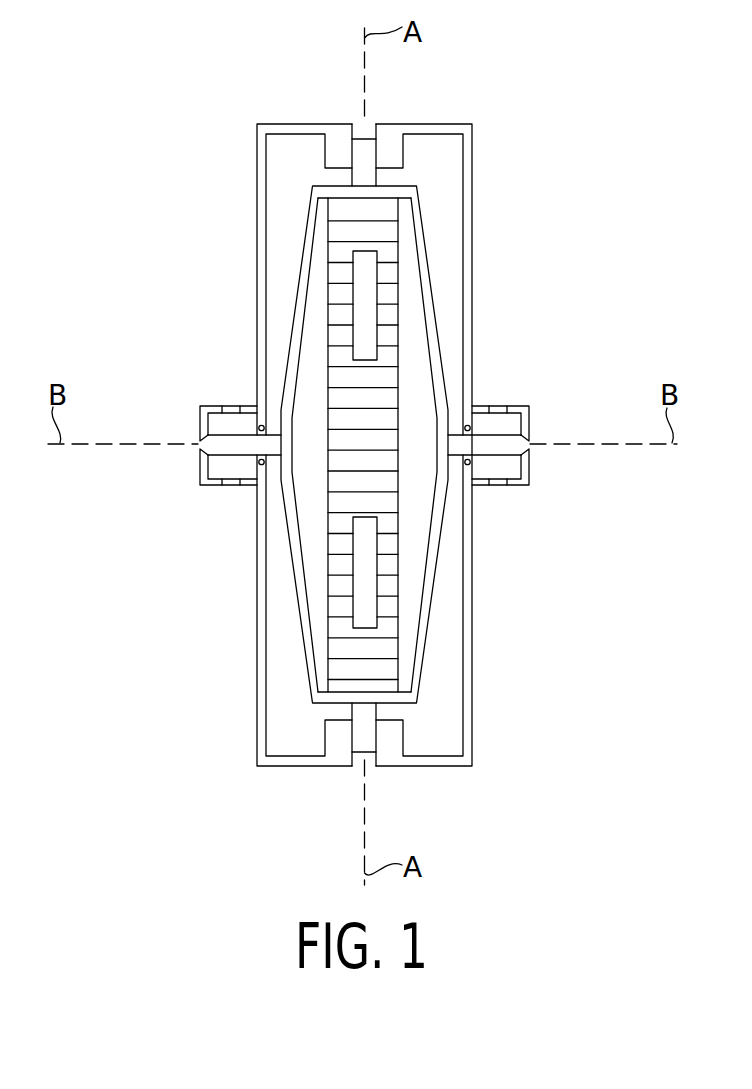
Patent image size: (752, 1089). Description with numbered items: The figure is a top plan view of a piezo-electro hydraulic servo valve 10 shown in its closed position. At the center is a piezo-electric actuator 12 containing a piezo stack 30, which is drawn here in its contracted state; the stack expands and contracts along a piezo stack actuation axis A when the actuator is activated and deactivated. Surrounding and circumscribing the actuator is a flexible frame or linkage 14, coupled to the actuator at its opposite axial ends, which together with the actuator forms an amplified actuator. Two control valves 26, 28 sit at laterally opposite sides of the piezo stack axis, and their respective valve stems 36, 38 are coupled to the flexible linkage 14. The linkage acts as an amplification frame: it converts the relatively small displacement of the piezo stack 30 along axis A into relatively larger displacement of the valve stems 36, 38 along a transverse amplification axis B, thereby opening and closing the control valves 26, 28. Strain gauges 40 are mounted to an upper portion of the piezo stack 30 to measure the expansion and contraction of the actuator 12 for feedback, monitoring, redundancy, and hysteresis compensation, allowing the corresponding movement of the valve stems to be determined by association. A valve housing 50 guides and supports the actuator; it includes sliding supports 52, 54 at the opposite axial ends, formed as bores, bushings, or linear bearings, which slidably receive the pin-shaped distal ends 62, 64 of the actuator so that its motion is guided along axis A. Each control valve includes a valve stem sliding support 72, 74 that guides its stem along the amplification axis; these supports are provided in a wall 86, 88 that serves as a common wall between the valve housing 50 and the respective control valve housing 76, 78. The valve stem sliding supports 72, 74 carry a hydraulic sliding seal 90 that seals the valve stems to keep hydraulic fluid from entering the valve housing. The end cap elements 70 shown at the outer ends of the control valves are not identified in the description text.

The piezo-electro hydraulic servo valve 10 is at (575, 110).
The piezo-electric actuator 12 is at (404, 308).
The flexible linkage 14 is at (440, 345).
The control valve 26 is at (509, 452).
The control valve 28 is at (233, 436).
The piezo stack 30 is at (322, 352).
The valve stem 36 is at (492, 438).
The valve stem 38 is at (233, 449).
The strain gauge 40 is at (363, 270).
The valve housing 50 is at (475, 182).
The sliding support 52 is at (337, 148).
The sliding support 54 is at (335, 735).
The distal end 62 is at (365, 162).
The distal end 64 is at (365, 722).
The end caps 70 is at (203, 462).
The valve stem sliding support 72 is at (473, 470).
The valve stem sliding support 74 is at (257, 468).
The control valve housing 76 is at (504, 401).
The control valve housing 78 is at (208, 400).
The common wall 86 is at (444, 420).
The common wall 88 is at (285, 420).
The hydraulic sliding seal 90 is at (258, 428).